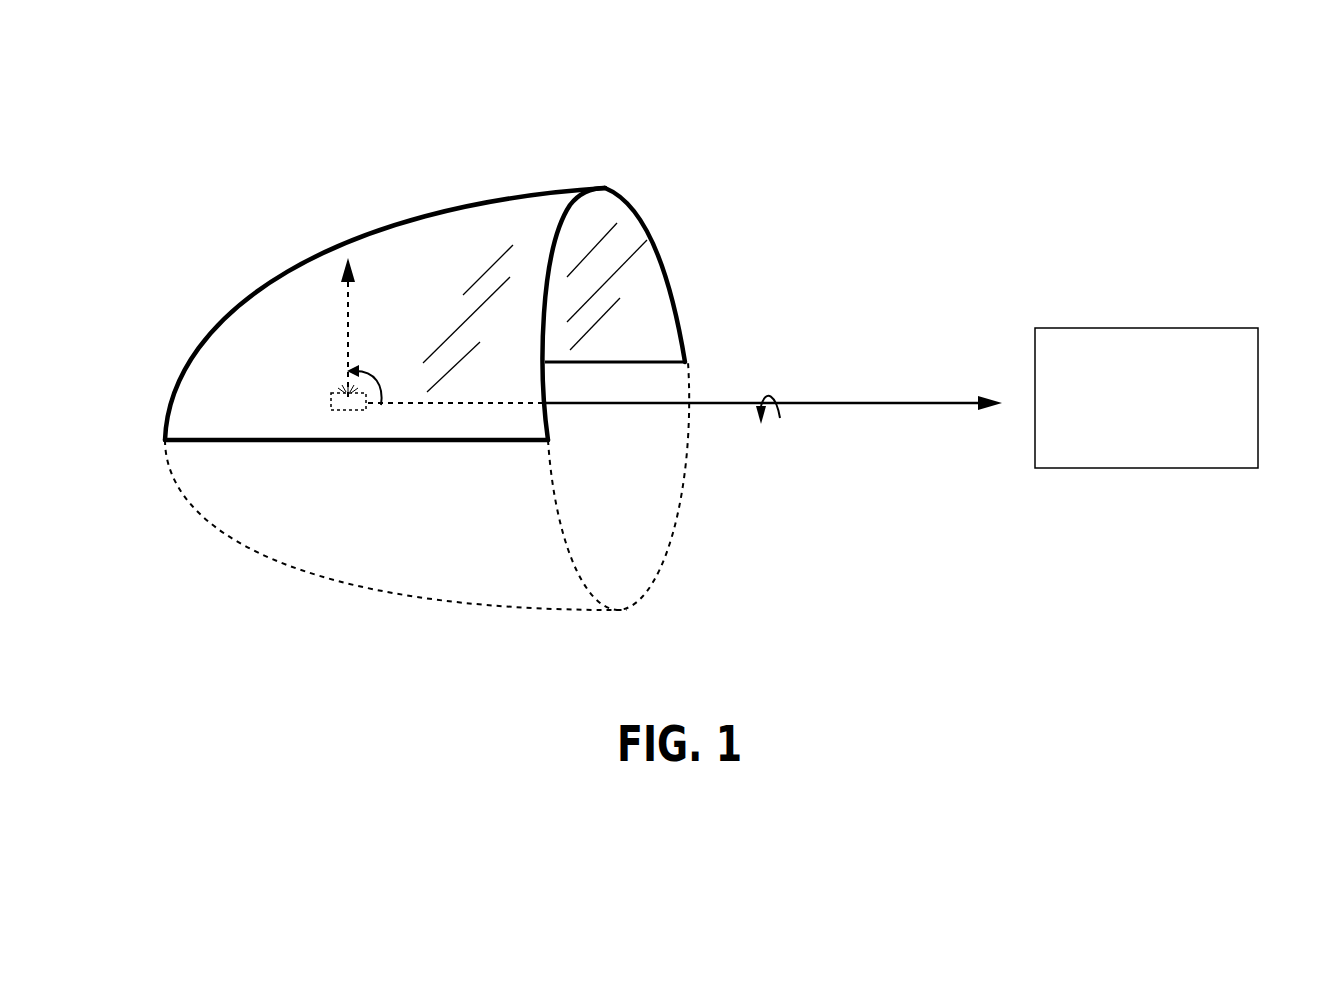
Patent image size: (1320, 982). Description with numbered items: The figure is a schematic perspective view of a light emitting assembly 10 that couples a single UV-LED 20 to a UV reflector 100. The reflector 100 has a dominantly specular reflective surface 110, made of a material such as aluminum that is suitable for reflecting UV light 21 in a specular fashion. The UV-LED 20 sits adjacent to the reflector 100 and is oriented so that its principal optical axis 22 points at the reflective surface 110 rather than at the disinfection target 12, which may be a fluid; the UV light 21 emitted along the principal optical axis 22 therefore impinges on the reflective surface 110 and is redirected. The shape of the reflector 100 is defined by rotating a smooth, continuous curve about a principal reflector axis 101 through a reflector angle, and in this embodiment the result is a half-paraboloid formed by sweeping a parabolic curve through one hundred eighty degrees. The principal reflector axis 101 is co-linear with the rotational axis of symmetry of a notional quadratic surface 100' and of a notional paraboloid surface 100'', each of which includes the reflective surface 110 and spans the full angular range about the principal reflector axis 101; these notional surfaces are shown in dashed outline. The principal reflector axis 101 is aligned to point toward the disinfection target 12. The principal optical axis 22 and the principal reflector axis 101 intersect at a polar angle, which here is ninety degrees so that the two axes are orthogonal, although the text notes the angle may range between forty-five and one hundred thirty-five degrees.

The light emitting assembly 10 is at (545, 108).
The UV reflector 100 is at (425, 297).
The reflective surface 110 is at (610, 258).
The notional quadratic surface 100' is at (505, 486).
The notional paraboloid surface 100'' is at (618, 486).
The principal reflector axis 101 is at (890, 403).
The principal optical axis 22 is at (345, 300).
The UV light 21 is at (337, 390).
The UV-LED 20 is at (323, 403).
The disinfection target 12 is at (1158, 328).